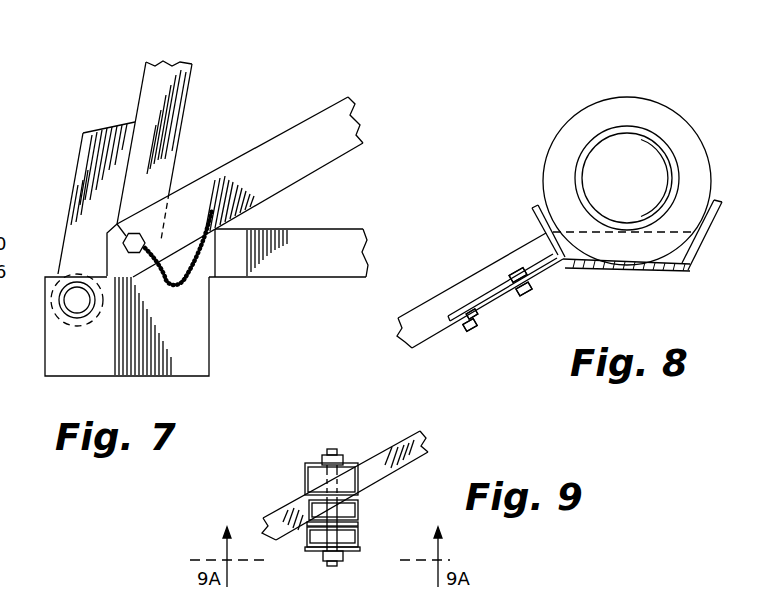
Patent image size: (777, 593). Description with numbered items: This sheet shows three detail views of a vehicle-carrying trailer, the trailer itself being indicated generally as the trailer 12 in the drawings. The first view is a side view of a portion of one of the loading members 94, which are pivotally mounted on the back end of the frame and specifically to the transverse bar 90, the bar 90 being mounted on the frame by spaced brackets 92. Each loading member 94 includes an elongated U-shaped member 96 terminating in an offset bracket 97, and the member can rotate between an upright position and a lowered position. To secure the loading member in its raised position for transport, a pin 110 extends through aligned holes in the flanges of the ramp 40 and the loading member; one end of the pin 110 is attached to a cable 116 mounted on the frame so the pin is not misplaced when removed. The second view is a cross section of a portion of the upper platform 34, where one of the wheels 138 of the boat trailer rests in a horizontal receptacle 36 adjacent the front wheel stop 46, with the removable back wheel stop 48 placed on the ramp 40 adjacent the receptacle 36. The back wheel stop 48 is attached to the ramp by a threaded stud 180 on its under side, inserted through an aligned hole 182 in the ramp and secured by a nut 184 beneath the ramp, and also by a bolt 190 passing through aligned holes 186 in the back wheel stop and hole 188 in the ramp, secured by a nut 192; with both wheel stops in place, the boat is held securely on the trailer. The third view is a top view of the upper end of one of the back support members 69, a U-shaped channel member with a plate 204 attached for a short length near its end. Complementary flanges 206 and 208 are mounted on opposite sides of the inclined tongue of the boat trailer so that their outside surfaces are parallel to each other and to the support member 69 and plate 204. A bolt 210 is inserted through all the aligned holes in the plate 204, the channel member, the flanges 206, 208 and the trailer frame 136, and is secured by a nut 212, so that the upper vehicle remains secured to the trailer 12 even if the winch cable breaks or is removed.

In FIG. 7, the frame member 12 is at (320, 270).
In FIG. 7, the ramp 40 is at (265, 157).
In FIG. 7, the transverse bar 90 is at (68, 300).
In FIG. 7, the bracket 92 is at (197, 340).
In FIG. 7, the loading member 94 is at (132, 100).
In FIG. 7, the U-shaped member 96 is at (183, 92).
In FIG. 7, the offset bracket 97 is at (66, 229).
In FIG. 7, the pin 110 is at (121, 231).
In FIG. 7, the cable 116 is at (203, 259).
In FIG. 8, the upper platform 34 is at (621, 281).
In FIG. 8, the receptacle 36 is at (655, 267).
In FIG. 8, the front wheel stop 46 is at (723, 232).
In FIG. 8, the back wheel stop 48 is at (532, 218).
In FIG. 8, the wheel 138 is at (693, 147).
In FIG. 8, the threaded stud 180 is at (473, 324).
In FIG. 8, the hole 182 is at (480, 315).
In FIG. 8, the nut 184 is at (465, 327).
In FIG. 8, the hole 186 is at (492, 285).
In FIG. 8, the hole 188 is at (540, 280).
In FIG. 8, the bolt 190 is at (518, 270).
In FIG. 8, the nut 192 is at (533, 285).
In FIG. 9, the back support member 69 is at (358, 530).
In FIG. 9, the frame 136 is at (398, 463).
In FIG. 9, the plate 204 is at (313, 548).
In FIG. 9, the flange 206 is at (360, 497).
In FIG. 9, the flange 208 is at (308, 478).
In FIG. 9, the bolt 210 is at (326, 452).
In FIG. 9, the nut 212 is at (339, 456).